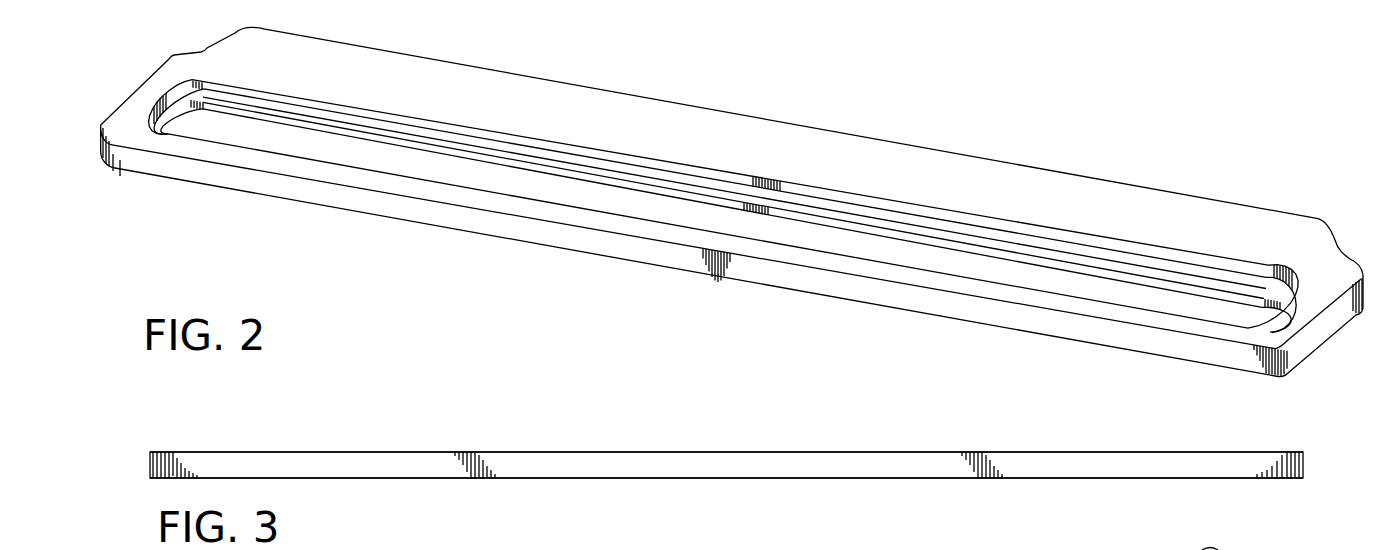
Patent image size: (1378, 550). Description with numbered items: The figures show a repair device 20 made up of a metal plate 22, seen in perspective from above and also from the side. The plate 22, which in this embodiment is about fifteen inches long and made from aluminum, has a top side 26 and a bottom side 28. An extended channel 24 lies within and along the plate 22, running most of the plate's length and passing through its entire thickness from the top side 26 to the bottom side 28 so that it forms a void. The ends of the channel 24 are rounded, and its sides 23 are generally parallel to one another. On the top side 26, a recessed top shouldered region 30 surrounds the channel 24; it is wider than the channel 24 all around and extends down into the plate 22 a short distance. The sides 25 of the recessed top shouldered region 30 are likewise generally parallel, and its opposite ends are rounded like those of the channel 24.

In FIG. 2, the repair device 20 is at (1077, 95).
In FIG. 3, the repair device 20 is at (388, 435).
In FIG. 2, the plate 22 is at (1147, 210).
In FIG. 3, the plate 22 is at (1023, 549).
In FIG. 2, the sides of channel 23 is at (842, 220).
In FIG. 2, the extended channel 24 is at (983, 263).
In FIG. 2, the sides of recessed top shouldered region 25 is at (573, 148).
In FIG. 2, the top side 26 is at (522, 107).
In FIG. 3, the top side 26 is at (598, 452).
In FIG. 3, the bottom side 28 is at (663, 478).
In FIG. 2, the recessed top shouldered region 30 is at (380, 128).